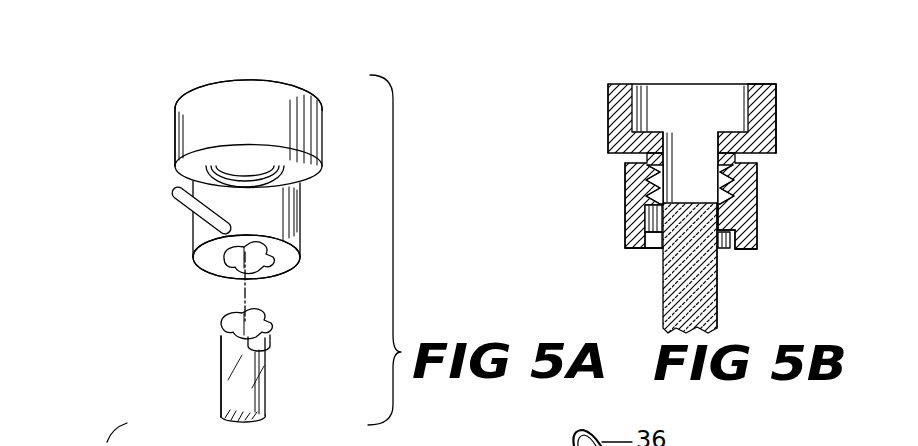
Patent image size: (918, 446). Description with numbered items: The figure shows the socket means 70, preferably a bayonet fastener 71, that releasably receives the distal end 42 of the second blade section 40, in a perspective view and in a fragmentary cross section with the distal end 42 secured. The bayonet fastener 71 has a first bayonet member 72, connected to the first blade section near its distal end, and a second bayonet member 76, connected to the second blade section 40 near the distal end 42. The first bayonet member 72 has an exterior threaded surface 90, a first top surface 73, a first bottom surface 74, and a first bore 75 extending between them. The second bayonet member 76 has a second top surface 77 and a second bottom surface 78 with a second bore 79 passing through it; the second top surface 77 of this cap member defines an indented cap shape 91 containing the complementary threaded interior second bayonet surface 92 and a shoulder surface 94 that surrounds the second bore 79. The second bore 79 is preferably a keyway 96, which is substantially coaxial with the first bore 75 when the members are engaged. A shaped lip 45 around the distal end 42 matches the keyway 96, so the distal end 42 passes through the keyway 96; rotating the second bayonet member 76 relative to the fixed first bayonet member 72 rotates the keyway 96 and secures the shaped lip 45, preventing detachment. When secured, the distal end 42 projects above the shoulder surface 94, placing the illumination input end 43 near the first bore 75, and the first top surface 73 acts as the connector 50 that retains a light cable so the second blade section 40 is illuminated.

In FIG. 5A, the second blade section 40 is at (265, 388).
In FIG. 5B, the second blade section 40 is at (718, 320).
In FIG. 5A, the distal end 42 is at (217, 337).
In FIG. 5A, the illumination input end 43 is at (223, 328).
In FIG. 5A, the shaped lip 45 is at (278, 333).
In FIG. 5B, the connector 50 is at (747, 100).
In FIG. 5A, the socket means 70 is at (233, 78).
In FIG. 5A, the bayonet fastener 71 is at (173, 107).
In FIG. 5B, the bayonet fastener 71 is at (608, 105).
In FIG. 5A, the first bayonet member 72 is at (263, 103).
In FIG. 5B, the first bayonet member 72 is at (777, 118).
In FIG. 5B, the first top surface 73 is at (762, 87).
In FIG. 5B, the first bottom surface 74 is at (728, 210).
In FIG. 5B, the first bore 75 is at (687, 152).
In FIG. 5A, the second bayonet member 76 is at (265, 212).
In FIG. 5B, the second bayonet member 76 is at (623, 235).
In FIG. 5B, the second top surface 77 is at (760, 155).
In FIG. 5A, the second bottom surface 78 is at (287, 265).
In FIG. 5B, the second bottom surface 78 is at (737, 250).
In FIG. 5B, the second bore 79 is at (623, 168).
In FIG. 5A, the threaded surface 90 is at (284, 182).
In FIG. 5B, the threaded surface 90 is at (637, 178).
In FIG. 5B, the indented cap shape 91 is at (743, 217).
In FIG. 5B, the threaded interior second bayonet surface 92 is at (632, 192).
In FIG. 5B, the shoulder surface 94 is at (722, 270).
In FIG. 5A, the keyway 96 is at (220, 272).
In FIG. 5B, the keyway 96 is at (655, 250).